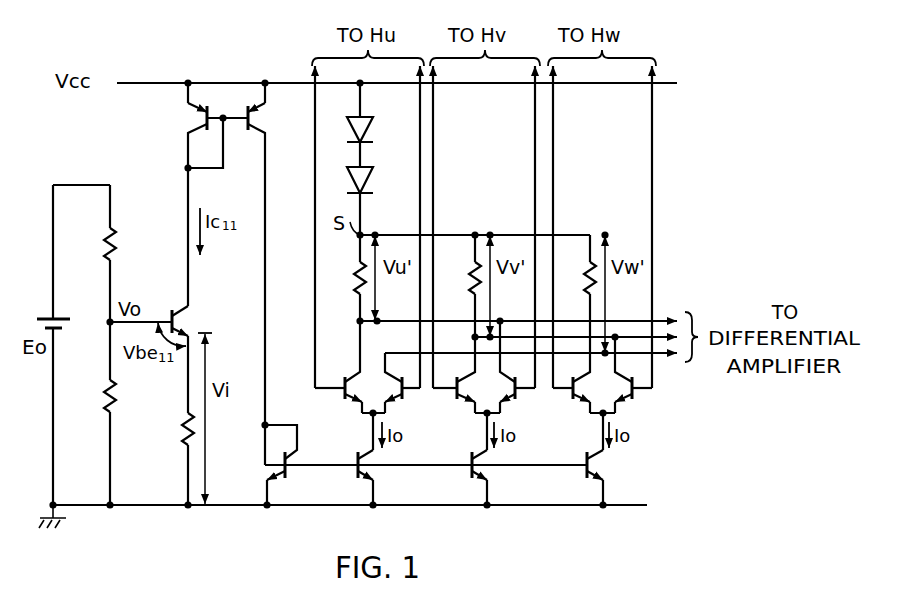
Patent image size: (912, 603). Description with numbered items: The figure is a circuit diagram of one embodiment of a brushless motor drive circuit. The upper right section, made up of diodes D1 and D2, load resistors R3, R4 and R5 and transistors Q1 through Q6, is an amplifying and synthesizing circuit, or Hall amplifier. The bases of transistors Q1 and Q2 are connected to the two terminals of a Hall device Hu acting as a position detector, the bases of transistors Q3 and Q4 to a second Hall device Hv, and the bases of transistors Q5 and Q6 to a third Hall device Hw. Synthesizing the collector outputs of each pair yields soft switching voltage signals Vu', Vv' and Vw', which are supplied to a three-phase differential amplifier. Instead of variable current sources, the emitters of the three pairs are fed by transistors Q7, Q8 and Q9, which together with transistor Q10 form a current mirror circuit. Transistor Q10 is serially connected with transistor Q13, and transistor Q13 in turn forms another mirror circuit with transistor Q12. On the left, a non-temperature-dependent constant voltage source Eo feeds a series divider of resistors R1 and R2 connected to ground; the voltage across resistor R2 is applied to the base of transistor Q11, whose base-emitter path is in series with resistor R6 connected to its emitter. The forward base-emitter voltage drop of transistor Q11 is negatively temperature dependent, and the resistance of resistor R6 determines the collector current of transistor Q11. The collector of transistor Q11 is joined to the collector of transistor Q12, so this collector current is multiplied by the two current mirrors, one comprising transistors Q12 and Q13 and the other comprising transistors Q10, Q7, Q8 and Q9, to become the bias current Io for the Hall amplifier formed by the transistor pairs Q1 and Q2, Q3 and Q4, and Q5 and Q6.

The transistor Q1 is at (338, 373).
The transistor Q2 is at (402, 389).
The transistor Q3 is at (454, 381).
The transistor Q4 is at (518, 373).
The transistor Q5 is at (571, 389).
The transistor Q6 is at (634, 381).
The transistor Q7 is at (356, 477).
The transistor Q8 is at (471, 477).
The transistor Q9 is at (586, 477).
The transistor Q10 is at (259, 465).
The transistor Q11 is at (203, 320).
The transistor Q12 is at (192, 194).
The transistor Q13 is at (275, 274).
The resistor R1 is at (128, 244).
The resistor R2 is at (96, 407).
The resistor R3 is at (343, 288).
The resistor R4 is at (460, 296).
The resistor R5 is at (576, 304).
The resistor R6 is at (171, 459).
The diode D1 is at (376, 129).
The diode D2 is at (376, 180).